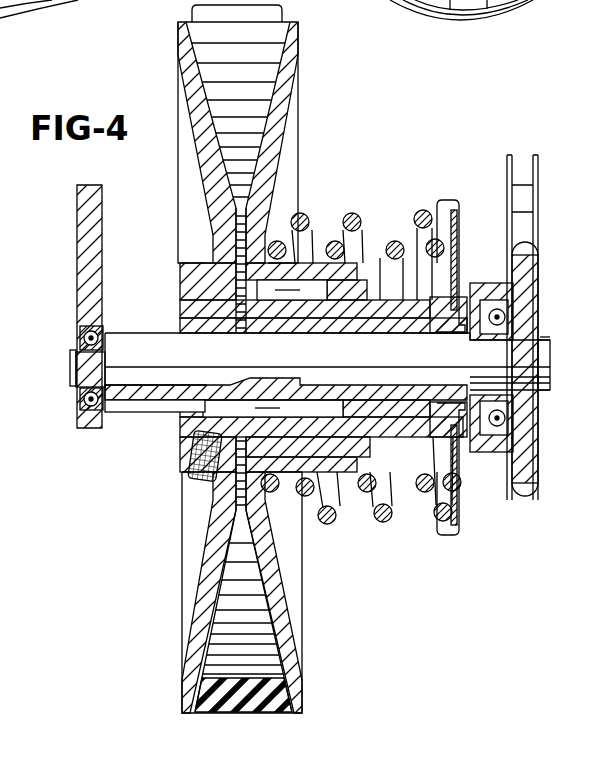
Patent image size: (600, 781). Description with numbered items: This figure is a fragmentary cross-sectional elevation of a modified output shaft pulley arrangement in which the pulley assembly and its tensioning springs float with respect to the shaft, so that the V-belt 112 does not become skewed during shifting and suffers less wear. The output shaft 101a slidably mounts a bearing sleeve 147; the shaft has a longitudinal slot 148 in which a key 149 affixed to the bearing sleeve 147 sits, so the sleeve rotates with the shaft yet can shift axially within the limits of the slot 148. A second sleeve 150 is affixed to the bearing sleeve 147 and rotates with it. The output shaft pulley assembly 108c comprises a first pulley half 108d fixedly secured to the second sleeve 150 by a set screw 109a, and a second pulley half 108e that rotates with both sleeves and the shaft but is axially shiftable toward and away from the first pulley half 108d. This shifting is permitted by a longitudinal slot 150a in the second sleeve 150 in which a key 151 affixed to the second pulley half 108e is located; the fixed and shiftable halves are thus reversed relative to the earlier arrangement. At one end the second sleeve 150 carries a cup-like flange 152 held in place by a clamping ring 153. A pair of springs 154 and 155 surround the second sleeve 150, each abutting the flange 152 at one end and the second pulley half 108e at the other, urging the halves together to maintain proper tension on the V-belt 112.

The output shaft 101a is at (170, 362).
The bearing sleeve 147 is at (182, 330).
The longitudinal slot 148 is at (177, 403).
The key 149 is at (240, 402).
The second sleeve 150 is at (182, 300).
The longitudinal slot 150a is at (400, 298).
The key 151 is at (290, 300).
The cup-like flange 152 is at (457, 173).
The clamping ring 153 is at (460, 283).
The spring 154 is at (395, 244).
The spring 155 is at (362, 190).
The output shaft pulley assembly 108c is at (180, 665).
The first pulley half 108d is at (198, 587).
The second pulley half 108e is at (293, 588).
The set screw 109a is at (188, 462).
The V-belt 112 is at (250, 705).